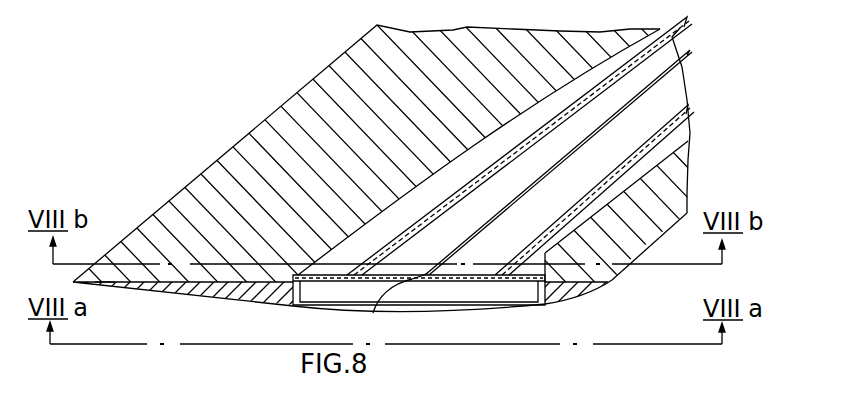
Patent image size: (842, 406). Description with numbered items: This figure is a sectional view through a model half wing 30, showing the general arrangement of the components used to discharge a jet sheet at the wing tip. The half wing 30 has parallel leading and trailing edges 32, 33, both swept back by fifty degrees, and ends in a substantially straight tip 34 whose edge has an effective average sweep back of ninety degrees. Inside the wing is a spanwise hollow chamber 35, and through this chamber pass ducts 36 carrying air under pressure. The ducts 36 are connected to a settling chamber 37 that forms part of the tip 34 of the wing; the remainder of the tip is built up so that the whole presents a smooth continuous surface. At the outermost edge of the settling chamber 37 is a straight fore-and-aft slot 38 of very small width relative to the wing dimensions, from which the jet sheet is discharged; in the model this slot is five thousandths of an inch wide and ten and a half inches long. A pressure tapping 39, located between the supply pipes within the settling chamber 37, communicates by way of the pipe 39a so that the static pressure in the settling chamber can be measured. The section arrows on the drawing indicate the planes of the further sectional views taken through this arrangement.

The half wing 30 is at (118, 275).
The leading edge 32 is at (677, 173).
The trailing edge 33 is at (200, 185).
The tip 34 is at (200, 297).
The spanwise hollow chamber 35 is at (585, 186).
The ducts 36 is at (661, 17).
The settling chamber 37 is at (472, 298).
The slot 38 is at (402, 310).
The pressure tapping 39 is at (373, 313).
The pipe 39a is at (688, 51).